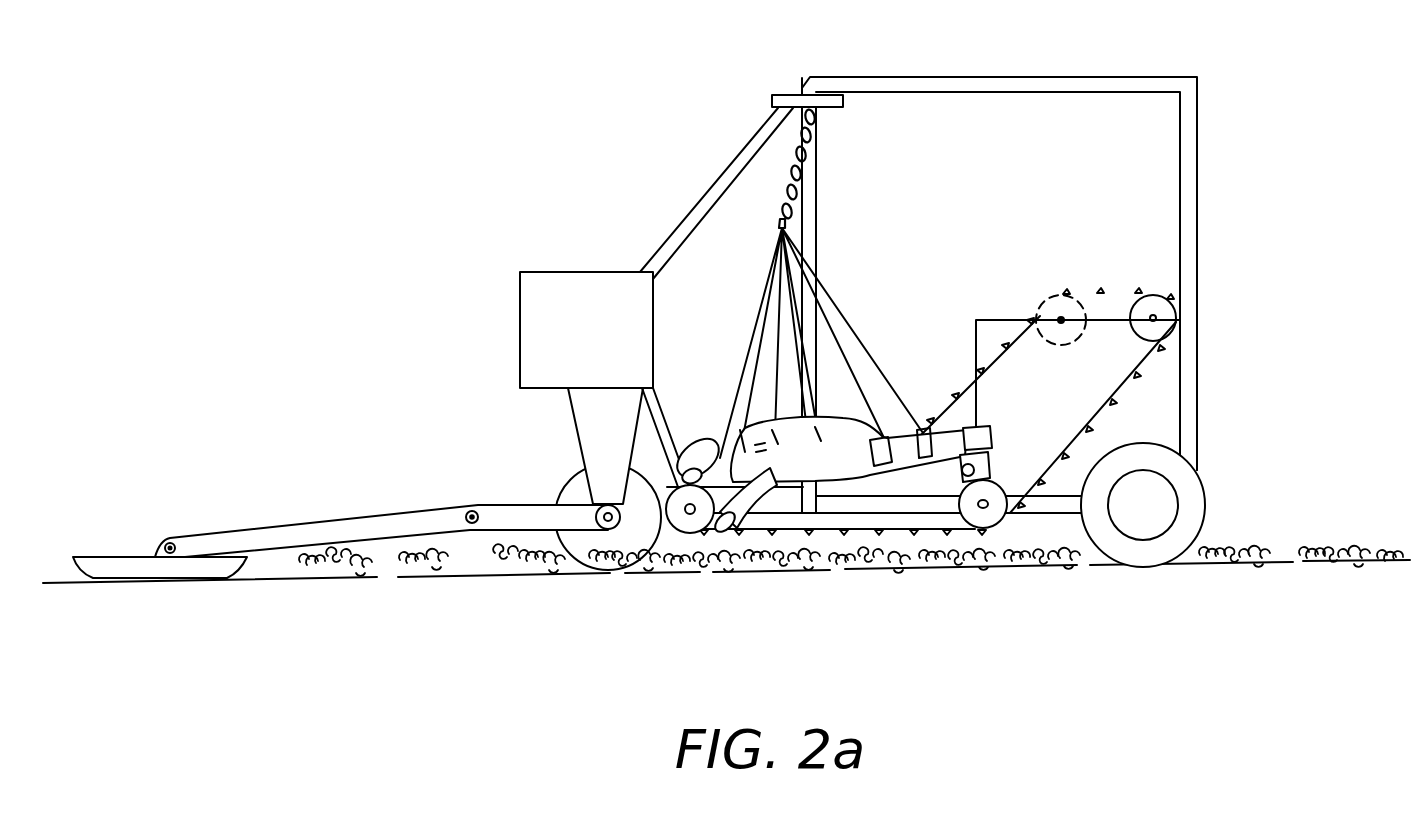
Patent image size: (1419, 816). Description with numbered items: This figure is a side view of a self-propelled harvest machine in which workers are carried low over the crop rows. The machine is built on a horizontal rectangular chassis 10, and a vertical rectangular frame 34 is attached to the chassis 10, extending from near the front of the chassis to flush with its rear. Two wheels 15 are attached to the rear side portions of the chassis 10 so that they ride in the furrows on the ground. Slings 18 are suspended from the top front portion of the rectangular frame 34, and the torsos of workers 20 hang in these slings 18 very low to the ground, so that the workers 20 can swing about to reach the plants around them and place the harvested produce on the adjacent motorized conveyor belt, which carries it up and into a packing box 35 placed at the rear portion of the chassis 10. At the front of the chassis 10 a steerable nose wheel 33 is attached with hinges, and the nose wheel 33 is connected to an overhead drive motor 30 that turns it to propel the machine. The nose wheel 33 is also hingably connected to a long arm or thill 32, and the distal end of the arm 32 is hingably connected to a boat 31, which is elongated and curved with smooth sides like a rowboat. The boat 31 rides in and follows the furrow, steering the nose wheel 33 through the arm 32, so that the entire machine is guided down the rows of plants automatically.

The chassis 10 is at (1057, 540).
The wheels 15 is at (1205, 493).
The slings 18 is at (855, 329).
The workers 20 is at (708, 430).
The drive motor 30 is at (585, 272).
The boat 31 is at (143, 557).
The arm 32 is at (366, 523).
The nose wheel 33 is at (556, 494).
The rectangular frame 34 is at (1021, 77).
The packing box 35 is at (1197, 344).